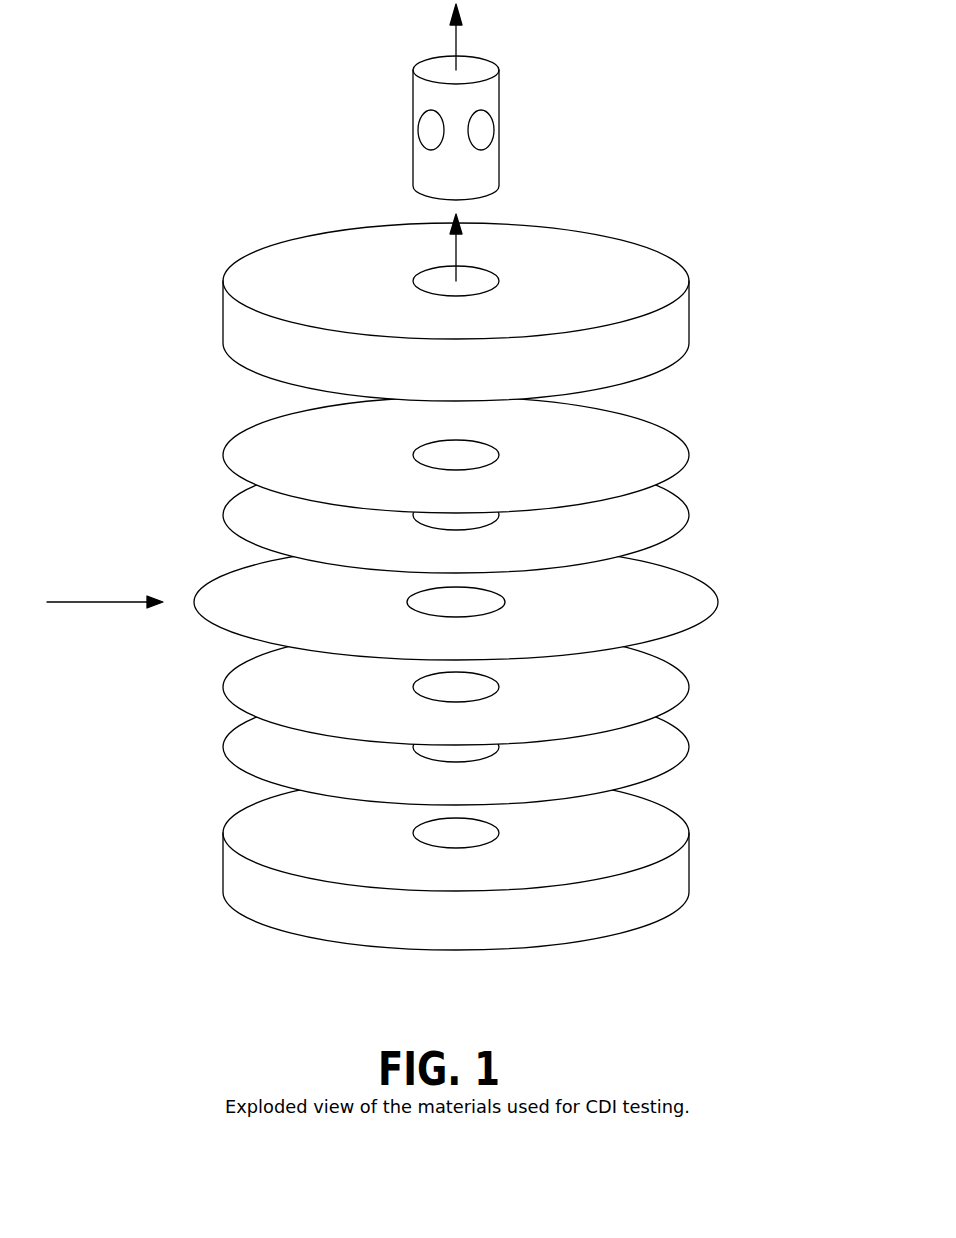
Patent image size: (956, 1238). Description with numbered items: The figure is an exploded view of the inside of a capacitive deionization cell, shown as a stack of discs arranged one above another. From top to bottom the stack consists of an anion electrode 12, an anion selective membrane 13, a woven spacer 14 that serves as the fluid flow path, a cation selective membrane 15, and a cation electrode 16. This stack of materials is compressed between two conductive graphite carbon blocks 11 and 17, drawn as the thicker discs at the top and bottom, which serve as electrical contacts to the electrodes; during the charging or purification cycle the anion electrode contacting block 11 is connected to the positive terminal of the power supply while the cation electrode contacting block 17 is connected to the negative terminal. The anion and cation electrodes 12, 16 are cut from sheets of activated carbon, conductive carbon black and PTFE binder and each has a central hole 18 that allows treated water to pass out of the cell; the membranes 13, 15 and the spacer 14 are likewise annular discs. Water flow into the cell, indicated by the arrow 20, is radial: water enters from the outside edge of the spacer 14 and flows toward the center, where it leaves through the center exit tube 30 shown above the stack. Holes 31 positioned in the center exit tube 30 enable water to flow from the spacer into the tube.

The anion electrode contacting graphite carbon block 11 is at (677, 322).
The anion electrode 12 is at (677, 458).
The anion selective membrane 13 is at (677, 516).
The woven spacer 14 is at (677, 598).
The cation selective membrane 15 is at (677, 687).
The cation electrode 16 is at (677, 745).
The cation electrode contacting graphite carbon block 17 is at (677, 880).
The hole 18 is at (450, 457).
The flow direction 20 is at (105, 589).
The center exit tube 30 is at (413, 108).
The holes 31 is at (435, 135).